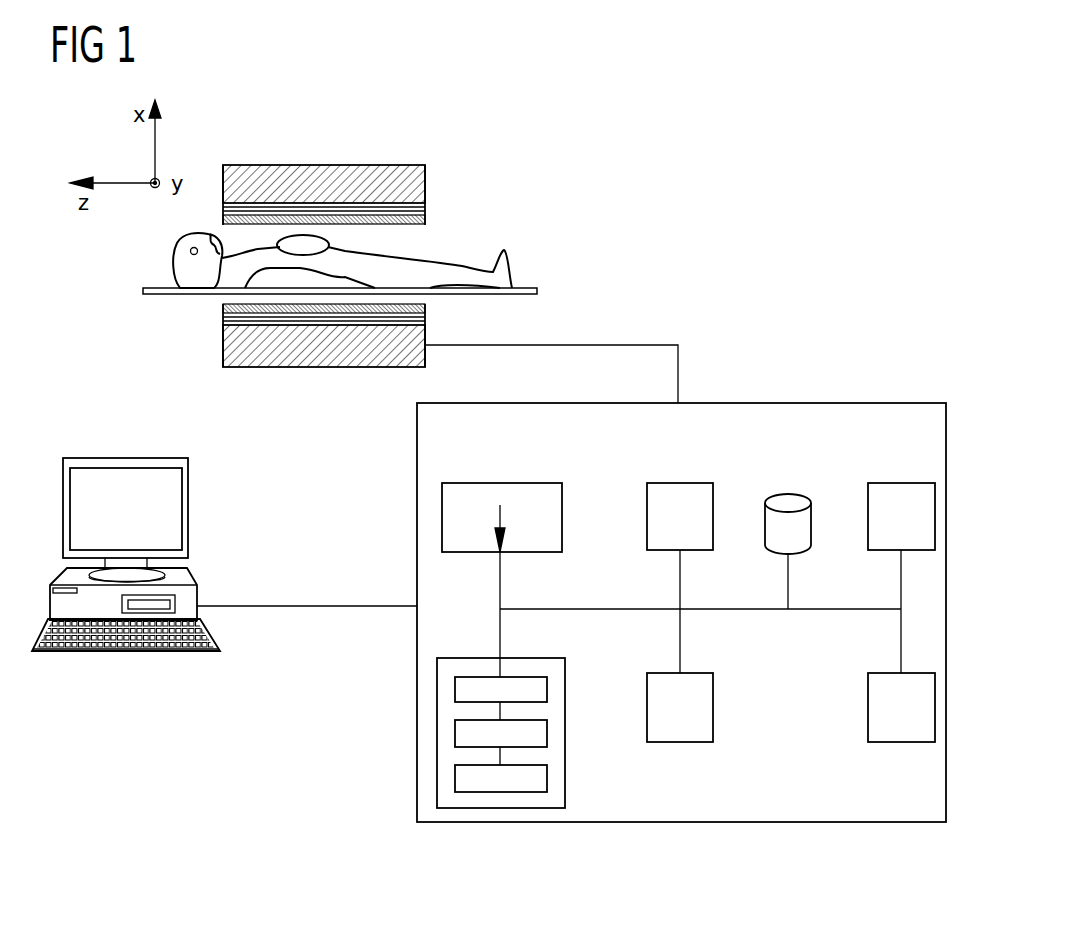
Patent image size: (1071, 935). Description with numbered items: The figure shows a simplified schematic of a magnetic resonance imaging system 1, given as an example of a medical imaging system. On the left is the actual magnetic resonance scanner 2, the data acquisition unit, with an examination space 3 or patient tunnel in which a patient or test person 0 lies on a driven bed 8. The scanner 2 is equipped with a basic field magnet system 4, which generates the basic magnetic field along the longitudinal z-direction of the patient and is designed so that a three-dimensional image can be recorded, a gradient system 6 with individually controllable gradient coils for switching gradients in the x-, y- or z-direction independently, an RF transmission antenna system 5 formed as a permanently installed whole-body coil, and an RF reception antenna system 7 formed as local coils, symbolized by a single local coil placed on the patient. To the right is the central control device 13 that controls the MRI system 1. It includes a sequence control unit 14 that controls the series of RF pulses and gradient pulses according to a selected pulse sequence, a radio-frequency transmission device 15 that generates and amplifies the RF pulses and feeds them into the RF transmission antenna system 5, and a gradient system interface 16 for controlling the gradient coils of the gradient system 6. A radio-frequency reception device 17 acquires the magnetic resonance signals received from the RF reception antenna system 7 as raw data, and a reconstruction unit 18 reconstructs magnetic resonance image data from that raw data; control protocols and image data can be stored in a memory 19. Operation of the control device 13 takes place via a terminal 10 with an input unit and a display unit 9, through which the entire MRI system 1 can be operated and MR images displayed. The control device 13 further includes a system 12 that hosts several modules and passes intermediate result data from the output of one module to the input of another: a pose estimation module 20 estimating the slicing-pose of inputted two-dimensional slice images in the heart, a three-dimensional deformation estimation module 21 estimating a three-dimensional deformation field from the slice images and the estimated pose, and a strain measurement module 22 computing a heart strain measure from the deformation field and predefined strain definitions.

The magnetic resonance imaging system 1 is at (752, 122).
The magnetic resonance scanner 2 is at (365, 172).
The examination space 3 is at (420, 248).
The basic field magnet system 4 is at (225, 347).
The RF transmission antenna system 5 is at (225, 223).
The gradient system 6 is at (420, 209).
The RF reception antenna system 7 is at (302, 245).
The driven bed 8 is at (536, 292).
The patient 0 is at (510, 276).
The display unit 9 is at (126, 458).
The terminal 10 is at (126, 652).
The system 12 is at (437, 718).
The central control device 13 is at (765, 403).
The sequence control unit 14 is at (500, 483).
The radio-frequency transmission device 15 is at (680, 483).
The gradient system interface 16 is at (713, 715).
The radio-frequency reception device 17 is at (901, 483).
The reconstruction unit 18 is at (868, 698).
The memory 19 is at (788, 492).
The pose estimation module 20 is at (547, 690).
The 3D deformation estimation module 21 is at (547, 733).
The strain measurement module 22 is at (547, 777).